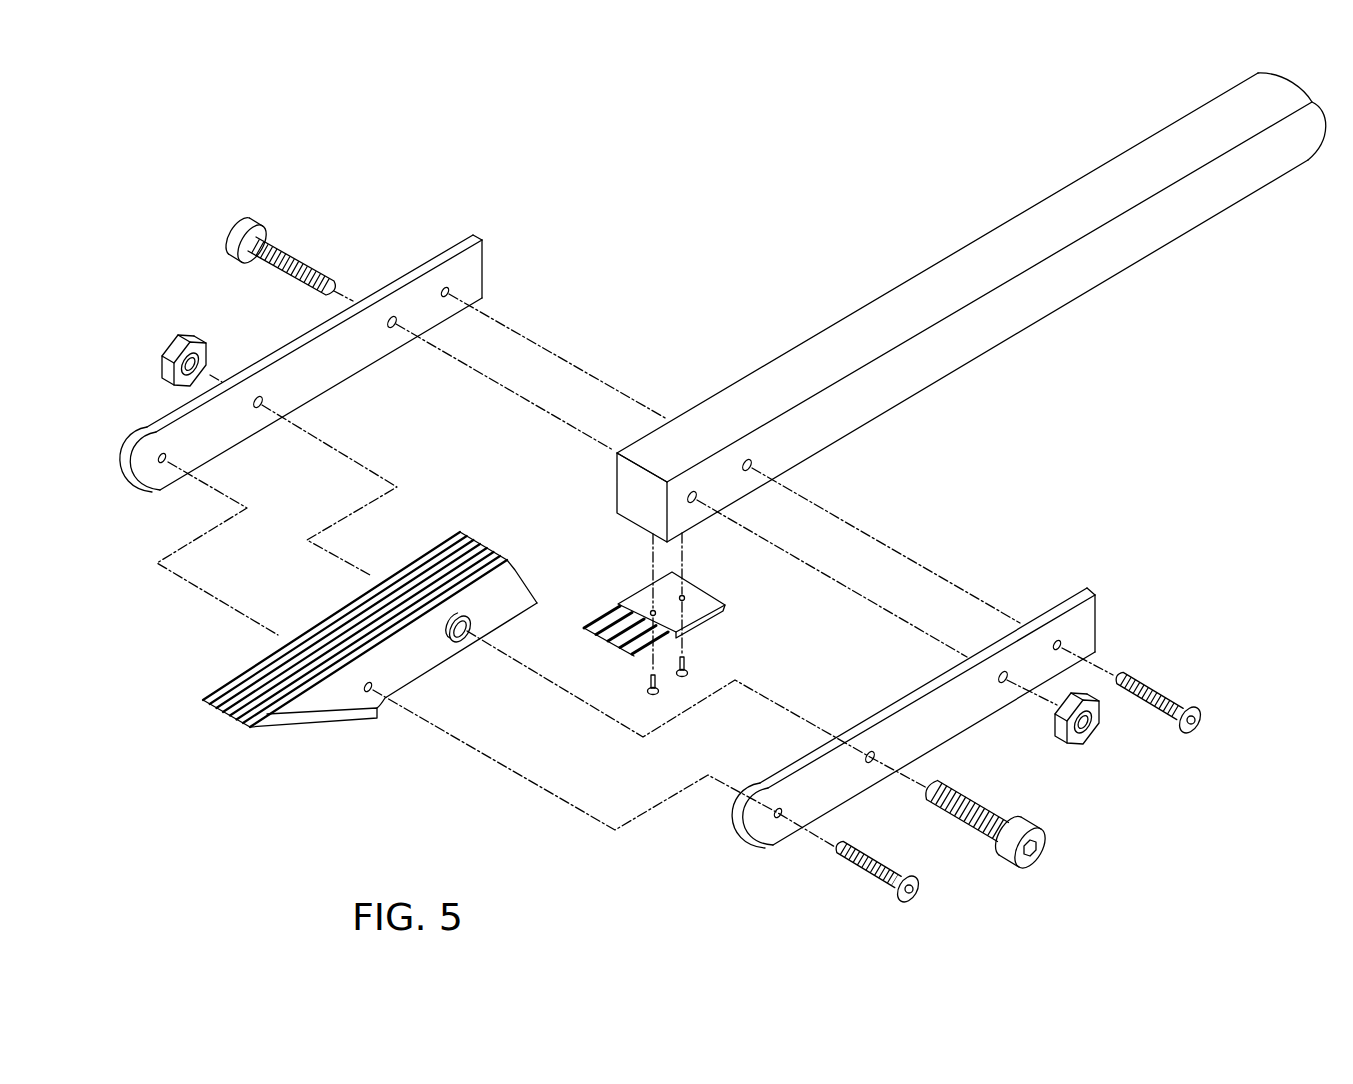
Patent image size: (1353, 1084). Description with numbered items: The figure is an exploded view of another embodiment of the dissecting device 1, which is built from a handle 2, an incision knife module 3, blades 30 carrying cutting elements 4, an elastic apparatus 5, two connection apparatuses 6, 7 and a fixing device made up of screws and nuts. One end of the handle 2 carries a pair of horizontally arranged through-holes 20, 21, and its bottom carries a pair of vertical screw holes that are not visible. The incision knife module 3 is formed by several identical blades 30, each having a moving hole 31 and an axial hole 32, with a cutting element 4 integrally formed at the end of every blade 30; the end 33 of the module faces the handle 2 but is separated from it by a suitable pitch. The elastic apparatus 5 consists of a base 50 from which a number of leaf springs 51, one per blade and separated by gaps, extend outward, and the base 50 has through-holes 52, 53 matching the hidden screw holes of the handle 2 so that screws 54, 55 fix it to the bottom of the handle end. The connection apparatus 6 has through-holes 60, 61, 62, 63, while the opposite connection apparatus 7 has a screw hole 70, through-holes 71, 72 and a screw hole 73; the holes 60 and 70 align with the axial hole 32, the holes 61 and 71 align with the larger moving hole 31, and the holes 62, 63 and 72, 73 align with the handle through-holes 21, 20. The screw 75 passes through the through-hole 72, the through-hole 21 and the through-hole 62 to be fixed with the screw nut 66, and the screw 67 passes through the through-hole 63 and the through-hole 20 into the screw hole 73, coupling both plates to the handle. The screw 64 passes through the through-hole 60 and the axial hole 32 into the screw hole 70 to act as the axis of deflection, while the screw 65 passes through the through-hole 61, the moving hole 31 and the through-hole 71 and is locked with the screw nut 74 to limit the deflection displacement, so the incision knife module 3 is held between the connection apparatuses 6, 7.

The dissecting device 1 is at (725, 168).
The handle 2 is at (1122, 253).
The through-hole 20 is at (752, 465).
The through-hole 21 is at (698, 498).
The incision knife module 3 is at (353, 657).
The blade 30 is at (415, 665).
The moving hole 31 is at (466, 640).
The axial hole 32 is at (365, 692).
The end 33 is at (528, 612).
The cutting element 4 is at (299, 720).
The elastic apparatus 5 is at (675, 618).
The base 50 is at (698, 592).
The leaf spring 51 is at (627, 658).
The through-hole 52 is at (656, 614).
The through-hole 53 is at (685, 599).
The screw 54 is at (659, 690).
The screw 55 is at (688, 665).
The connection apparatus 6 is at (933, 735).
The through-hole 60 is at (776, 818).
The through-hole 61 is at (872, 763).
The through-hole 62 is at (1005, 683).
The through-hole 63 is at (1062, 646).
The screw 64 is at (875, 885).
The screw 65 is at (978, 833).
The screw nut 66 is at (1083, 745).
The screw 67 is at (1165, 725).
The connection apparatus 7 is at (322, 380).
The screw hole 70 is at (163, 463).
The through-hole 71 is at (260, 408).
The through-hole 72 is at (395, 327).
The screw hole 73 is at (447, 296).
The screw nut 74 is at (187, 342).
The screw 75 is at (283, 255).